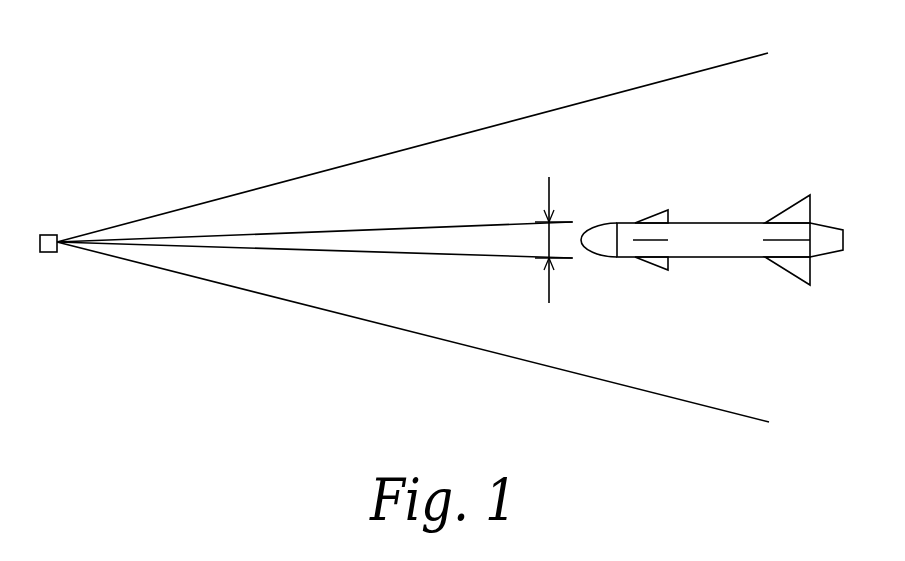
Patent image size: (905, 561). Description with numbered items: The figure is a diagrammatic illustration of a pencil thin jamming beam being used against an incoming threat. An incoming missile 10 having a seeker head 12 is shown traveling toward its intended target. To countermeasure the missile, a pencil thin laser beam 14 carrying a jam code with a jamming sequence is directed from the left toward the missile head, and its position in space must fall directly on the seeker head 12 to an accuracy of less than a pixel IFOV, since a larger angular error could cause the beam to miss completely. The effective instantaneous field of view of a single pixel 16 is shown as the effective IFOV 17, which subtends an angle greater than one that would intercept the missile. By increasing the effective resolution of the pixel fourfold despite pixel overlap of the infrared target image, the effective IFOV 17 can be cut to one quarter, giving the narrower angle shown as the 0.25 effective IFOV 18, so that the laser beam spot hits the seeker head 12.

The incoming missile 10 is at (722, 263).
The seeker head 12 is at (603, 232).
The pencil thin laser beam 14 is at (328, 230).
The pixel 16 is at (47, 253).
The effective IFOV 17 is at (574, 157).
The 0.25 effective IFOV angle 18 is at (548, 243).